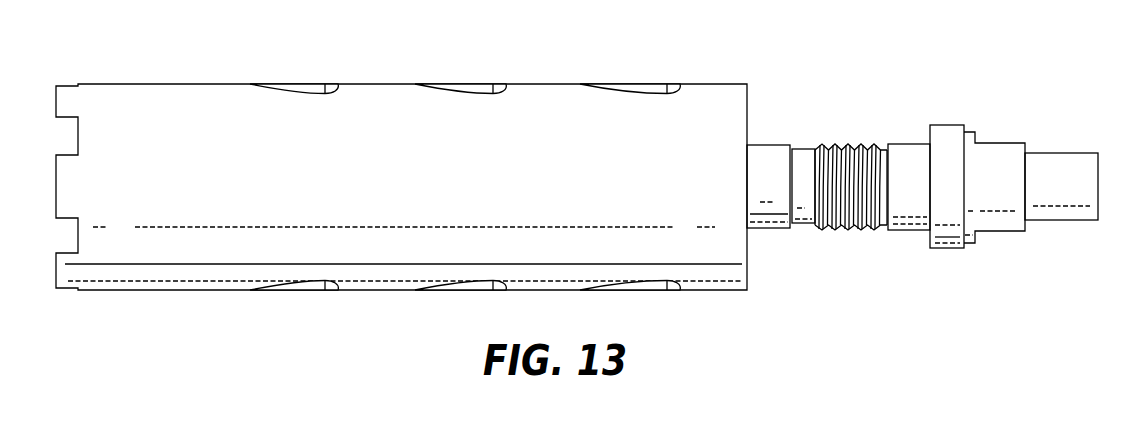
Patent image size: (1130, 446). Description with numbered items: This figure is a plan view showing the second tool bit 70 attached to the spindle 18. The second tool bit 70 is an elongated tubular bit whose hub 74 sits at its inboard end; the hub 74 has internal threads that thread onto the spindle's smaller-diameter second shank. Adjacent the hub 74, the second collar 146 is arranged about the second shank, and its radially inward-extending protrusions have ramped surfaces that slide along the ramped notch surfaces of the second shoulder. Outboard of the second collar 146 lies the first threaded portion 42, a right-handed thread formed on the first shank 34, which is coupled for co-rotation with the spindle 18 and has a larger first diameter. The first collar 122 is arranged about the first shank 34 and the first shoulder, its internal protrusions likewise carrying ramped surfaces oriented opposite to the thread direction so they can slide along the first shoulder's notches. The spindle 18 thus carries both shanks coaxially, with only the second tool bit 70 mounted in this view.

The second tool bit 70 is at (142, 102).
The hub 74 is at (763, 153).
The second collar 146 is at (803, 155).
The first threaded portion 42 is at (855, 150).
The first shank 34 is at (908, 152).
The first collar 122 is at (945, 132).
The spindle 18 is at (1003, 143).